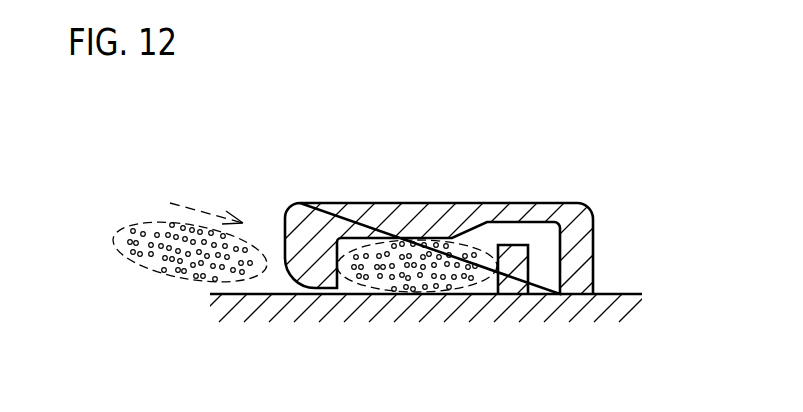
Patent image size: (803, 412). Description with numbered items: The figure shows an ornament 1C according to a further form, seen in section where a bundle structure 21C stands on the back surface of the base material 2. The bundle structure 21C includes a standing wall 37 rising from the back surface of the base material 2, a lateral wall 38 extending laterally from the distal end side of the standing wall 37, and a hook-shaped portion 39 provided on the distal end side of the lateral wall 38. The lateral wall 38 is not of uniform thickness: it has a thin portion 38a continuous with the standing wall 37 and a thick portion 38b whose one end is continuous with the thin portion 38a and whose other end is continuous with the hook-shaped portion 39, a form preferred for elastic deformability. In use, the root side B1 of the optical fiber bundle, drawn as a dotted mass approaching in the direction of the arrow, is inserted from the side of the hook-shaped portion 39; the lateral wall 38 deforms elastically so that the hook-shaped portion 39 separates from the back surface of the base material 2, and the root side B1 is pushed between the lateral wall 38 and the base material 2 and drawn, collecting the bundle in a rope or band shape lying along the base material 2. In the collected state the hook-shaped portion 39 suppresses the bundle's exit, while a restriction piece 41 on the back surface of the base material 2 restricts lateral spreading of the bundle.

The vibration damping device 1C is at (455, 233).
The bundle structure 21C is at (455, 241).
The standing wall 37 is at (578, 245).
The lateral wall 38 is at (438, 152).
The thin portion 38a is at (515, 210).
The thick portion 38b is at (437, 215).
The hook-shaped portion 39 is at (310, 258).
The restriction piece 41 is at (518, 263).
The base material 2 is at (607, 293).
The root side of the optical fiber bundle B1 is at (138, 266).